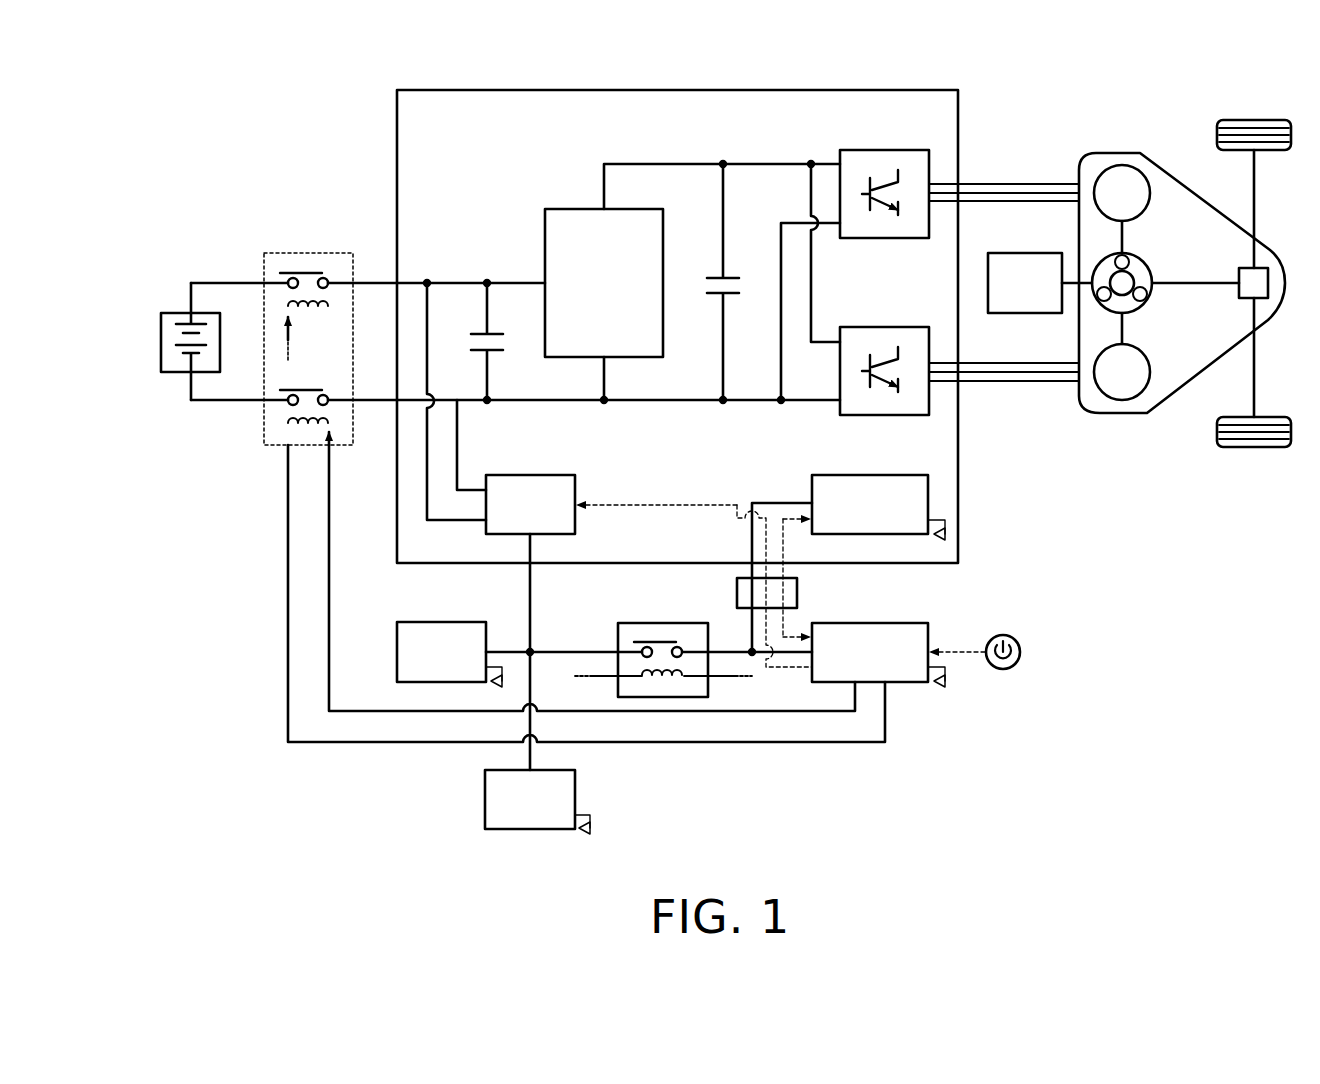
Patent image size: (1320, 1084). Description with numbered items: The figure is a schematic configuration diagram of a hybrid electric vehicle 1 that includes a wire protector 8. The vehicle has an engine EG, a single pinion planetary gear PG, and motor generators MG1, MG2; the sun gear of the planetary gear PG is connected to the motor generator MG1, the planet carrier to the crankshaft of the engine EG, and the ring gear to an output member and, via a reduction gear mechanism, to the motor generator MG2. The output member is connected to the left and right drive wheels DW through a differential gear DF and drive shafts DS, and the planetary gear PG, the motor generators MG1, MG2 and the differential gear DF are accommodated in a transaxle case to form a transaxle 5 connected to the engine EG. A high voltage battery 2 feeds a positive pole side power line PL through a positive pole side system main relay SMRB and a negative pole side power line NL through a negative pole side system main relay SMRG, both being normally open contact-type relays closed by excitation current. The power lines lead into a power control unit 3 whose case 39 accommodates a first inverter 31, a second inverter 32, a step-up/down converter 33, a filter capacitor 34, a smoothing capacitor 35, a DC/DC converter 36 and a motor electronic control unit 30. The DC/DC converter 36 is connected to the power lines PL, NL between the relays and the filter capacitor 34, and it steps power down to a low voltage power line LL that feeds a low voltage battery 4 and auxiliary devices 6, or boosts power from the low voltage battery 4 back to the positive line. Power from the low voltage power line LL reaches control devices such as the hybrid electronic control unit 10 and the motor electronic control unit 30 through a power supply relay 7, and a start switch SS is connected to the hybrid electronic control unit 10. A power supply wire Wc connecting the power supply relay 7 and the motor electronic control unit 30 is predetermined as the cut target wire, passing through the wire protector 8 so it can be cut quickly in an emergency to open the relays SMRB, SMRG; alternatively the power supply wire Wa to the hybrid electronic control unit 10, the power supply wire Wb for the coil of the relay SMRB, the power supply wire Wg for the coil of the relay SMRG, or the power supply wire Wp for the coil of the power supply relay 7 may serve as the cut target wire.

The hybrid electric vehicle 1 is at (700, 446).
The high voltage battery 2 is at (161, 340).
The power control unit 3 is at (738, 366).
The low voltage battery 4 is at (397, 632).
The transaxle 5 is at (1158, 239).
The auxiliary devices 6 is at (485, 800).
The power supply relay 7 is at (618, 632).
The wire protector 8 is at (797, 596).
The hybrid electronic control unit 10 is at (928, 632).
The motor electronic control unit 30 is at (812, 485).
The first inverter 31 is at (900, 149).
The second inverter 32 is at (900, 326).
The step-up/down converter 33 is at (572, 208).
The filter capacitor 34 is at (478, 328).
The smoothing capacitor 35 is at (736, 266).
The DC/DC converter 36 is at (575, 485).
The case 39 is at (958, 492).
The positive pole side system main relay SMRB is at (278, 275).
The negative pole side system main relay SMRG is at (282, 412).
The positive pole side power line PL is at (373, 280).
The negative pole side power line NL is at (368, 410).
The low voltage power line LL is at (530, 590).
The power supply wire Wg is at (329, 590).
The power supply wire Wb is at (288, 638).
The power supply wire Wc is at (737, 590).
The power supply wire Wp is at (720, 677).
The power supply wire Wa is at (780, 652).
The start switch SS is at (1021, 652).
The single pinion planetary gear PG is at (1092, 262).
The engine EG is at (1040, 283).
The motor generator MG1 is at (1122, 193).
The motor generator MG2 is at (1122, 372).
The drive shafts DS is at (1253, 246).
The differential gear DF is at (1238, 290).
The drive wheel DW is at (1253, 120).